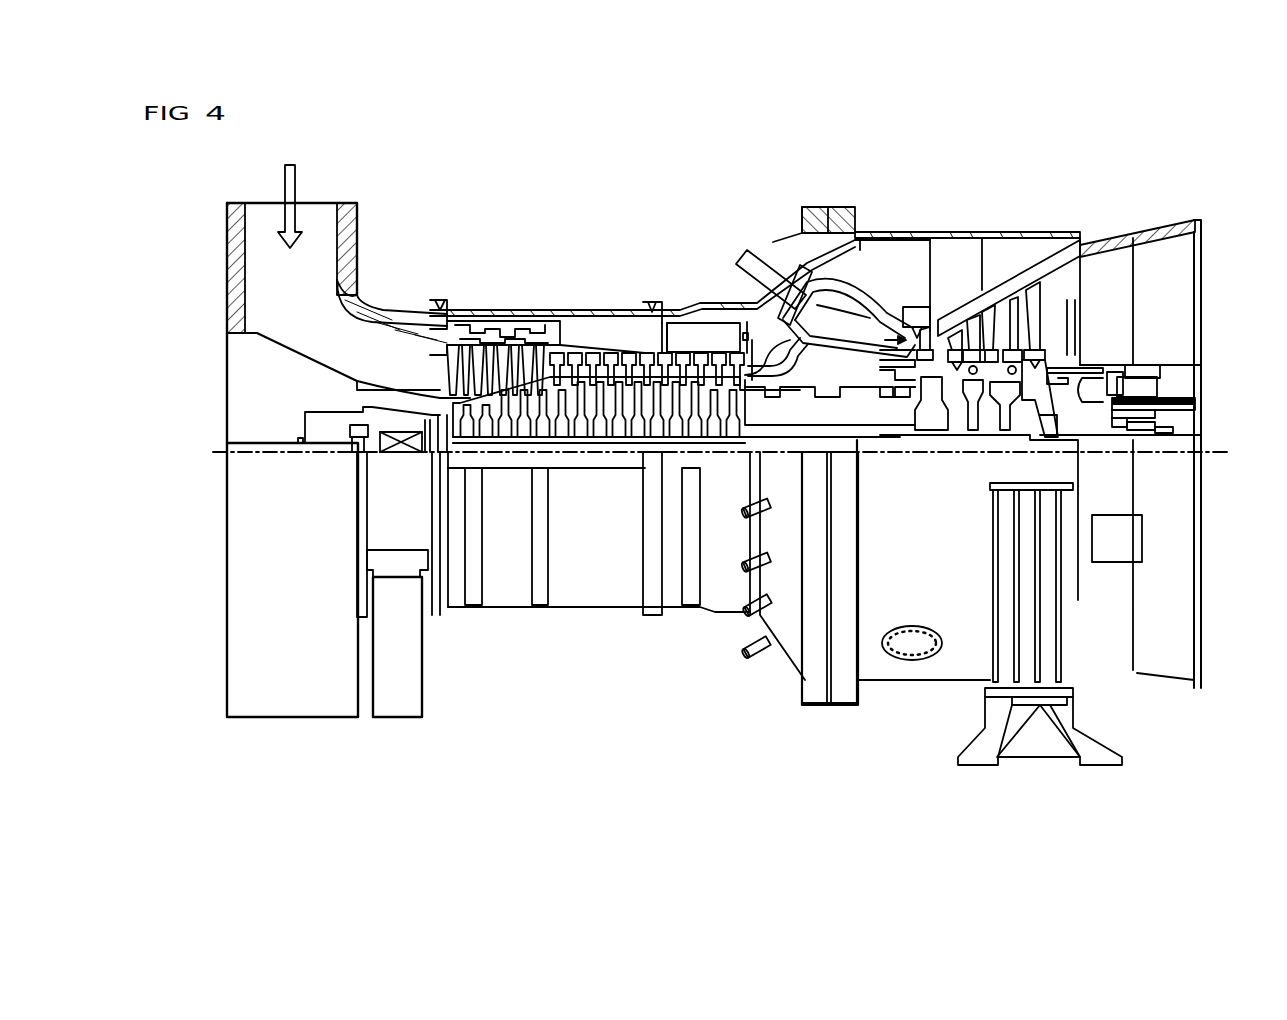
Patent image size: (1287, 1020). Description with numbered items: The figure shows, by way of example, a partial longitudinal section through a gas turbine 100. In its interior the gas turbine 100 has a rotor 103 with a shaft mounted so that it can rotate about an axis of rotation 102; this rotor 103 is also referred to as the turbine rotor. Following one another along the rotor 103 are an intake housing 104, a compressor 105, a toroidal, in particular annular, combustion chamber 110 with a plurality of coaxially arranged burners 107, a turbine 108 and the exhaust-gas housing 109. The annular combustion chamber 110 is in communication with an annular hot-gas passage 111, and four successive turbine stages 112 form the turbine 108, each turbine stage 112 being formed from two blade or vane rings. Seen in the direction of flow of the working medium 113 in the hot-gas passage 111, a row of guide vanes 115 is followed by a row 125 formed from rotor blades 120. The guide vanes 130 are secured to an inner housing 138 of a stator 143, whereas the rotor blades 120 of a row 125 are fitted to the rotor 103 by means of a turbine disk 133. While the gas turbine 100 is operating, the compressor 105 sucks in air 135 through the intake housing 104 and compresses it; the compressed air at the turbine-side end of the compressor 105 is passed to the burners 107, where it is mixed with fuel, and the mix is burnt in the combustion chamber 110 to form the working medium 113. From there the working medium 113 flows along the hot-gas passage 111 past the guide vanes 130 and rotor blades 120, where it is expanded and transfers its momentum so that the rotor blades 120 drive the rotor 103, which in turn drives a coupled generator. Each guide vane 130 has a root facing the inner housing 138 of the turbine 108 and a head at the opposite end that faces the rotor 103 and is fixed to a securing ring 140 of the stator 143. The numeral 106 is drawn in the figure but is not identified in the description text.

The gas turbine 100 is at (580, 205).
The axis of rotation 102 is at (213, 447).
The rotor 103 is at (768, 432).
The intake housing 104 is at (352, 263).
The compressor 105 is at (514, 290).
The combustion chamber 106 is at (850, 317).
The burners 107 is at (742, 256).
The turbine 108 is at (933, 200).
The exhaust-gas housing 109 is at (1120, 233).
The combustion chamber 110 is at (812, 297).
The hot-gas passage 111 is at (1052, 305).
The turbine stage 112 is at (1038, 200).
The working medium 113 is at (827, 297).
The row of guide vanes 115 is at (1006, 255).
The rotor blades 120 is at (950, 380).
The row of rotor blades 125 is at (1057, 248).
The guide vanes 130 is at (935, 372).
The turbine disk 133 is at (1050, 422).
The air 135 is at (298, 196).
The inner housing 138 is at (957, 270).
The securing ring 140 is at (905, 352).
The stator 143 is at (892, 322).